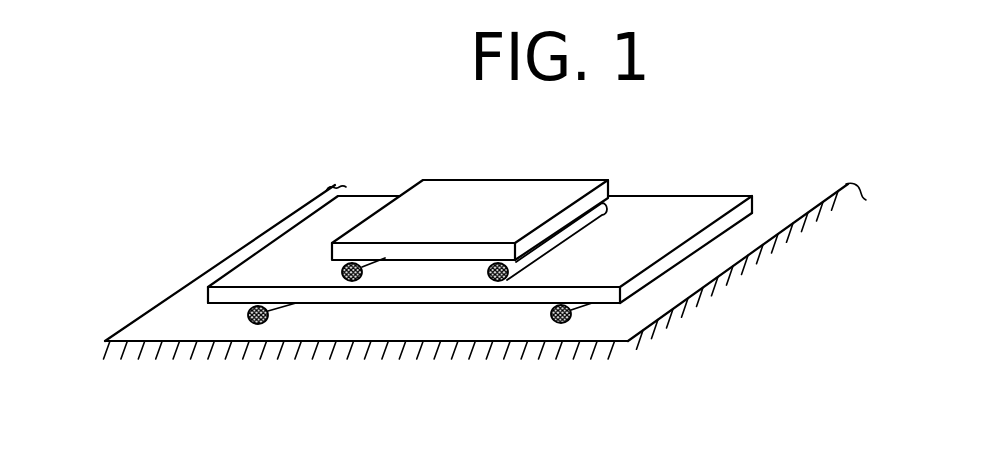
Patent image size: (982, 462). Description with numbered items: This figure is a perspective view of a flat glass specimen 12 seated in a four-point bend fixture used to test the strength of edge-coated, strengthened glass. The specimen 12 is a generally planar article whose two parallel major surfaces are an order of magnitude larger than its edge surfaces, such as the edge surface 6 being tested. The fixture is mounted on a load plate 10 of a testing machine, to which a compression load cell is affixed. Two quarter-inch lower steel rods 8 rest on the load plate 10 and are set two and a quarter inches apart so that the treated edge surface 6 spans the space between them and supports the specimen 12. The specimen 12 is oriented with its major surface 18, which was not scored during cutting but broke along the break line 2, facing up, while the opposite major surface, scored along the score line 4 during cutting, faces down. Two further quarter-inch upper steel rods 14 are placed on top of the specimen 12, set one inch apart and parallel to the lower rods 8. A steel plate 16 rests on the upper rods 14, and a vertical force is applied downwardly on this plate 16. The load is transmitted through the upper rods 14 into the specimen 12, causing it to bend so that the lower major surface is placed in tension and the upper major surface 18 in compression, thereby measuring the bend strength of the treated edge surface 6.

The break line 2 is at (387, 290).
The score line 4 is at (433, 303).
The edge surface 6 is at (462, 297).
The lower steel rods 8 is at (265, 318).
The load plate 10 is at (722, 257).
The glass specimen 12 is at (697, 212).
The upper steel rods 14 is at (348, 275).
The steel plate 16 is at (492, 195).
The major surface 18 is at (355, 215).